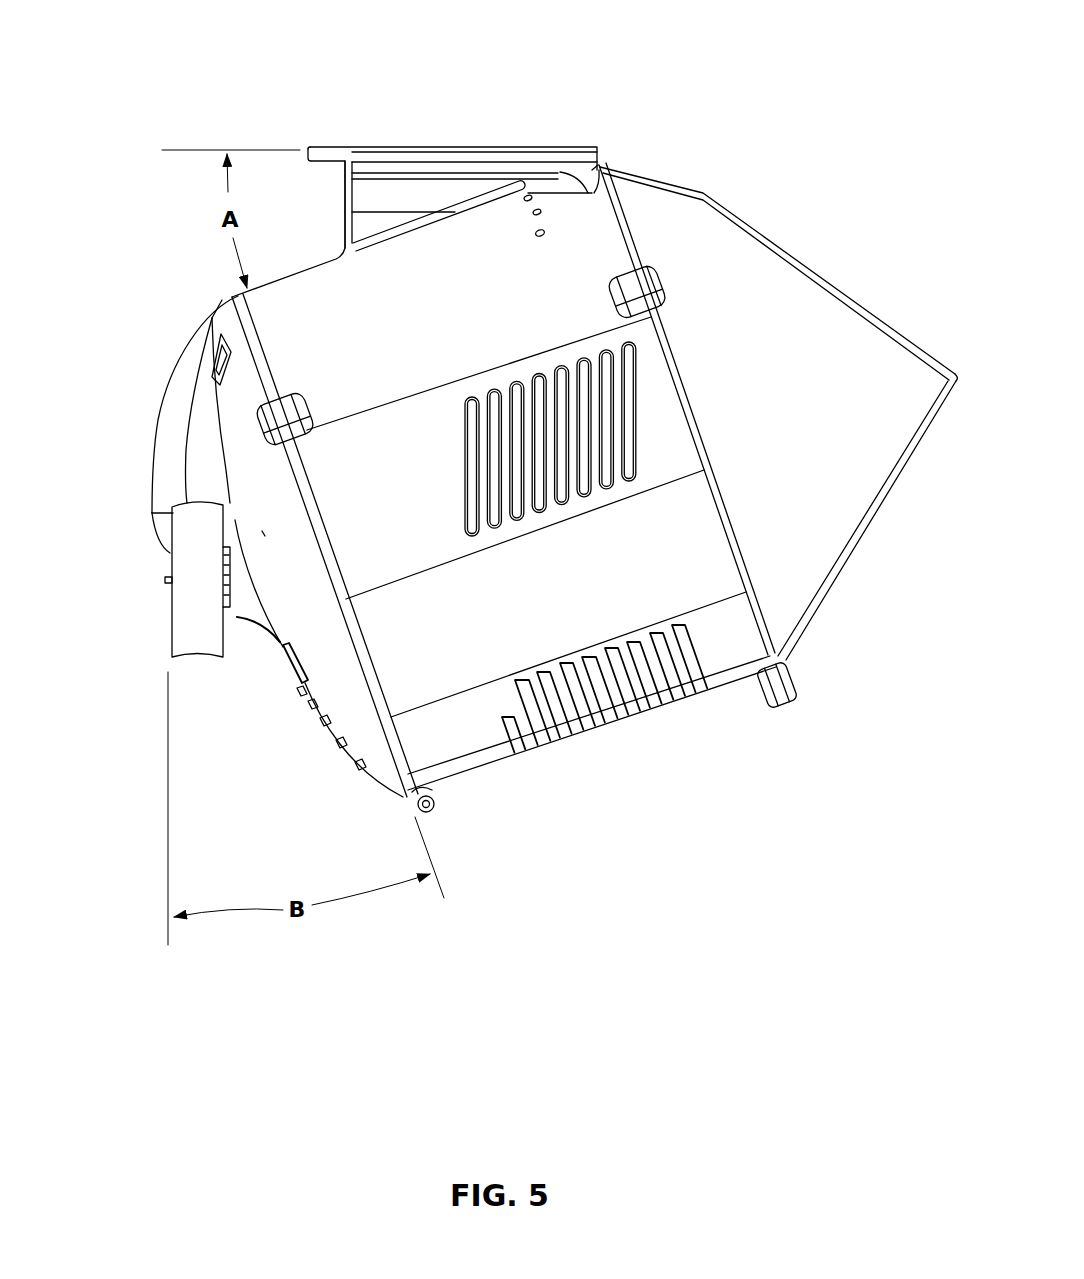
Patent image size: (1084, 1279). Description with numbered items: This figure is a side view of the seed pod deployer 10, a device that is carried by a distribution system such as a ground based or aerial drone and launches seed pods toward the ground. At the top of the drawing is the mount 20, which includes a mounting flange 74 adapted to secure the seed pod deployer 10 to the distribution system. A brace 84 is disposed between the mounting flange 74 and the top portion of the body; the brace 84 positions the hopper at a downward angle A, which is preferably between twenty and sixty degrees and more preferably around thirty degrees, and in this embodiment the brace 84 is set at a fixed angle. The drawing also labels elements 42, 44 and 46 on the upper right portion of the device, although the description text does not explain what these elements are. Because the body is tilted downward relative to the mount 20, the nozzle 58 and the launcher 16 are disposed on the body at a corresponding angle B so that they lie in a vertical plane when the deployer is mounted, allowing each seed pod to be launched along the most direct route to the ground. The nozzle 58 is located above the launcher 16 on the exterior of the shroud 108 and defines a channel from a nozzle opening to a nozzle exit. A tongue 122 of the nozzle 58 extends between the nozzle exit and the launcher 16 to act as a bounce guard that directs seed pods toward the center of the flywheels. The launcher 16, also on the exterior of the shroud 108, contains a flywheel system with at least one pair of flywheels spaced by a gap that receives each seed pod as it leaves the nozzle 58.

The seed pod deployer 10 is at (713, 748).
The launcher 16 is at (149, 623).
The mount 20 is at (459, 126).
The lid 42 is at (921, 463).
The lid edge 44 is at (817, 550).
The lid panel 46 is at (803, 244).
The nozzle 58 is at (176, 418).
The mounting flange 74 is at (556, 150).
The brace 84 is at (347, 188).
The shroud 108 is at (340, 700).
The tongue 122 is at (162, 526).